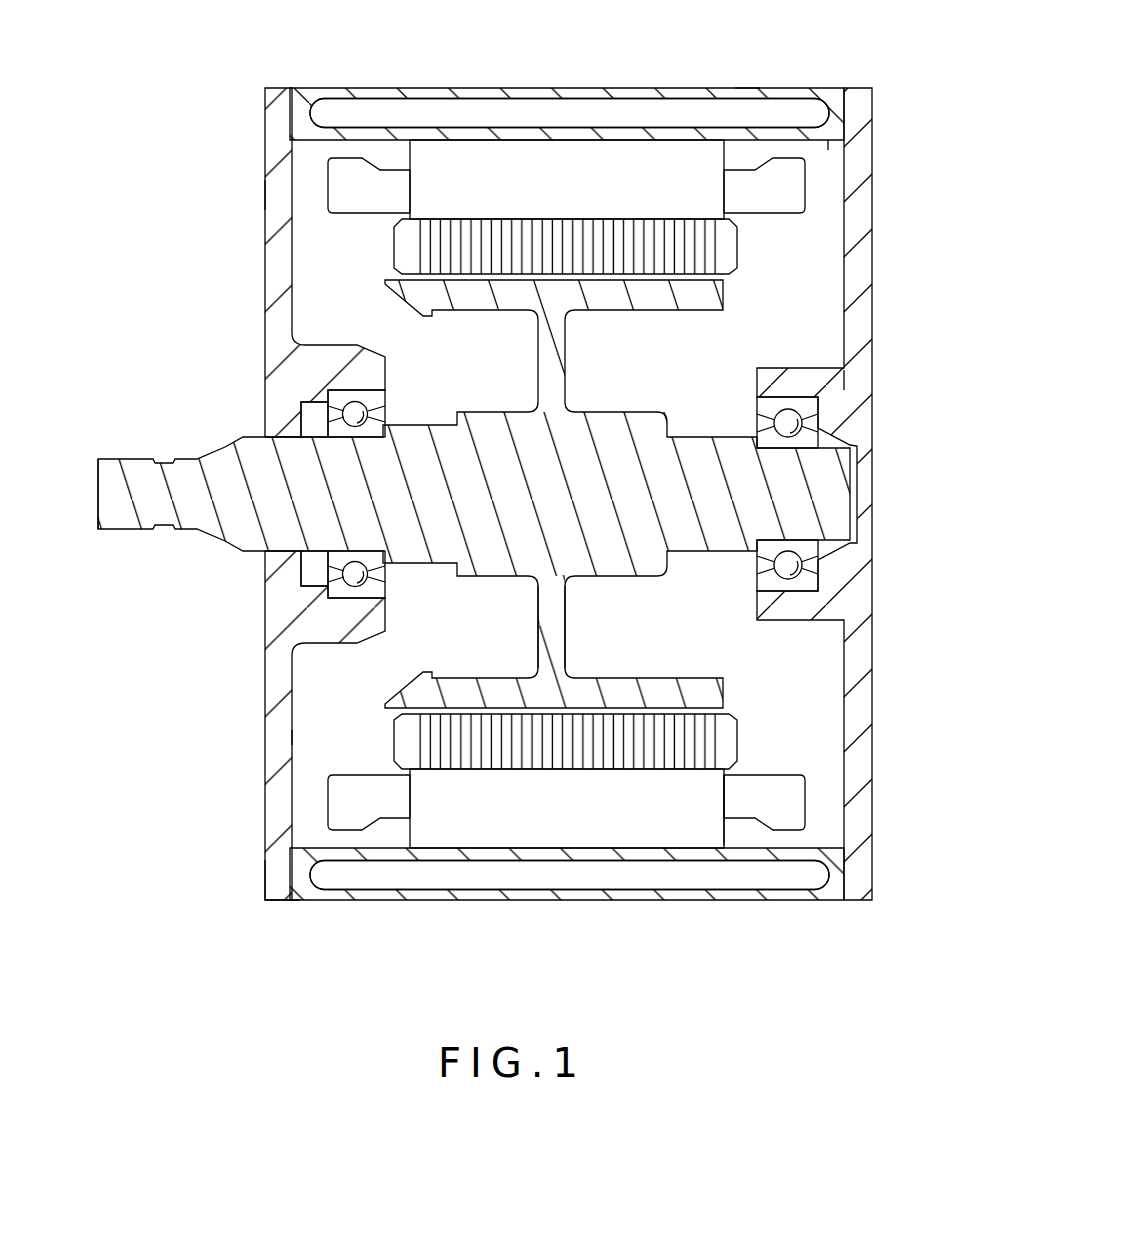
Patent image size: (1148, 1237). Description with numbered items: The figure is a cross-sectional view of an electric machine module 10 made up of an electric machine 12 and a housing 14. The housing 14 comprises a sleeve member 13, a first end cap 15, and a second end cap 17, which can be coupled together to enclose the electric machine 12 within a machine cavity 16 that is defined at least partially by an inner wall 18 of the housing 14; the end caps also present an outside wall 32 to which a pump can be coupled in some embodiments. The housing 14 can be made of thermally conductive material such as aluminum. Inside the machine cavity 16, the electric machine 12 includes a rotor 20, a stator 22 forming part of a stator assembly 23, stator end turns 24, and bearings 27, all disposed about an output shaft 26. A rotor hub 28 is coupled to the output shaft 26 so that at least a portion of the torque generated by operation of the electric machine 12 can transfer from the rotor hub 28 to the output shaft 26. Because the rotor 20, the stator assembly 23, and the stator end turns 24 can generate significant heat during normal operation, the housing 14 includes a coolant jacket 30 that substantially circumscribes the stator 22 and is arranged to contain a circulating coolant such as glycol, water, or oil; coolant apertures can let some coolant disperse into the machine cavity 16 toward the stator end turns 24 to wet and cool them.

The electric machine module 10 is at (866, 44).
The electric machine 12 is at (763, 292).
The sleeve member 13 is at (522, 90).
The housing 14 is at (265, 872).
The first end cap 15 is at (268, 150).
The machine cavity 16 is at (556, 497).
The second end cap 17 is at (870, 578).
The inner wall 18 is at (818, 135).
The rotor 20 is at (710, 745).
The stator 22 is at (447, 823).
The stator assembly 23 is at (745, 832).
The stator end turns 24 is at (348, 185).
The output shaft 26 is at (110, 495).
The bearings 27 is at (318, 415).
The rotor hub 28 is at (550, 622).
The coolant jacket 30 is at (440, 112).
The outside wall 32 is at (733, 88).